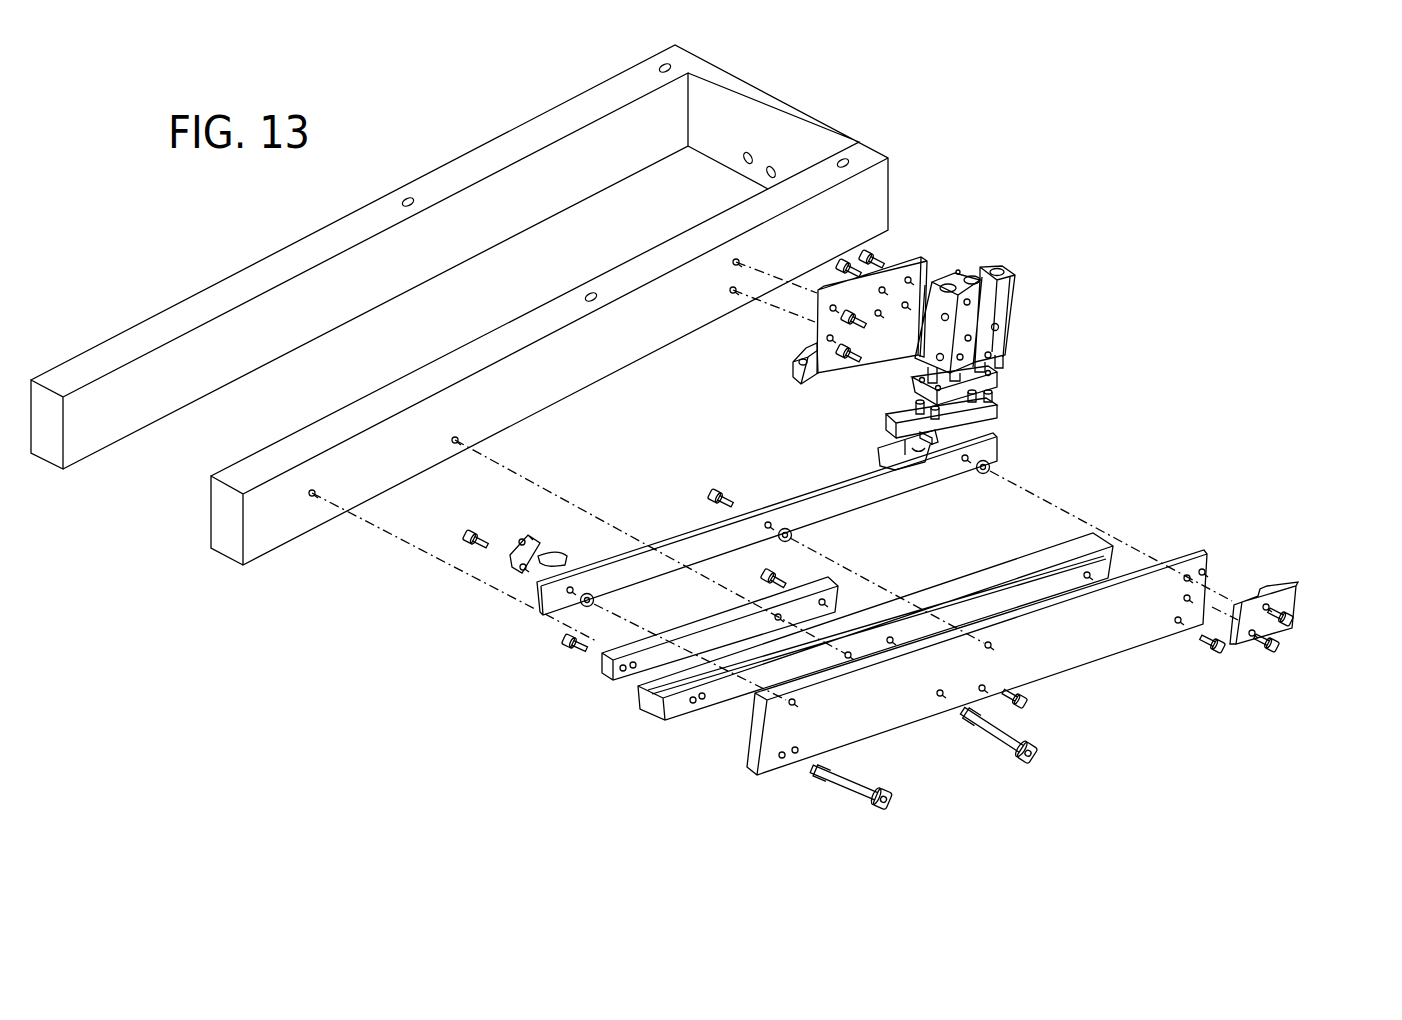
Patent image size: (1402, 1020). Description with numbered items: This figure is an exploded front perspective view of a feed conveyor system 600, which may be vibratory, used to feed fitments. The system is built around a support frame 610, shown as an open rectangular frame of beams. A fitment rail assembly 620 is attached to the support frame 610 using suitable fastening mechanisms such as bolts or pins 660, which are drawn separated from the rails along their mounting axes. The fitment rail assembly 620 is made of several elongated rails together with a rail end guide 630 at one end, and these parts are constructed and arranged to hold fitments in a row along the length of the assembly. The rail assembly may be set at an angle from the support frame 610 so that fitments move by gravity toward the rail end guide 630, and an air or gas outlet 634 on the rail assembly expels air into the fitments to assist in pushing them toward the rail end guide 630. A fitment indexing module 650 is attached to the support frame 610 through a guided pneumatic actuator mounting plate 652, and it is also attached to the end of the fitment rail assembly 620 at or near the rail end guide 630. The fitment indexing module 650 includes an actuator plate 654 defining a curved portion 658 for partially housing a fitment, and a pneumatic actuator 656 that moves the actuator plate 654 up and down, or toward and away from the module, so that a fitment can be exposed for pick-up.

The feed conveyor system 600 is at (1224, 386).
The support frame 610 is at (866, 193).
The fitment rail assembly 620 is at (743, 798).
The rail end guide 630 is at (1287, 598).
The air or gas outlet 634 is at (518, 560).
The fitment indexing module 650 is at (1024, 318).
The guided pneumatic actuator mounting plate 652 is at (923, 257).
The actuator plate 654 is at (988, 420).
The pneumatic actuator 656 is at (1012, 262).
The curved portion 658 is at (885, 440).
The bolts or pins 660 is at (890, 785).